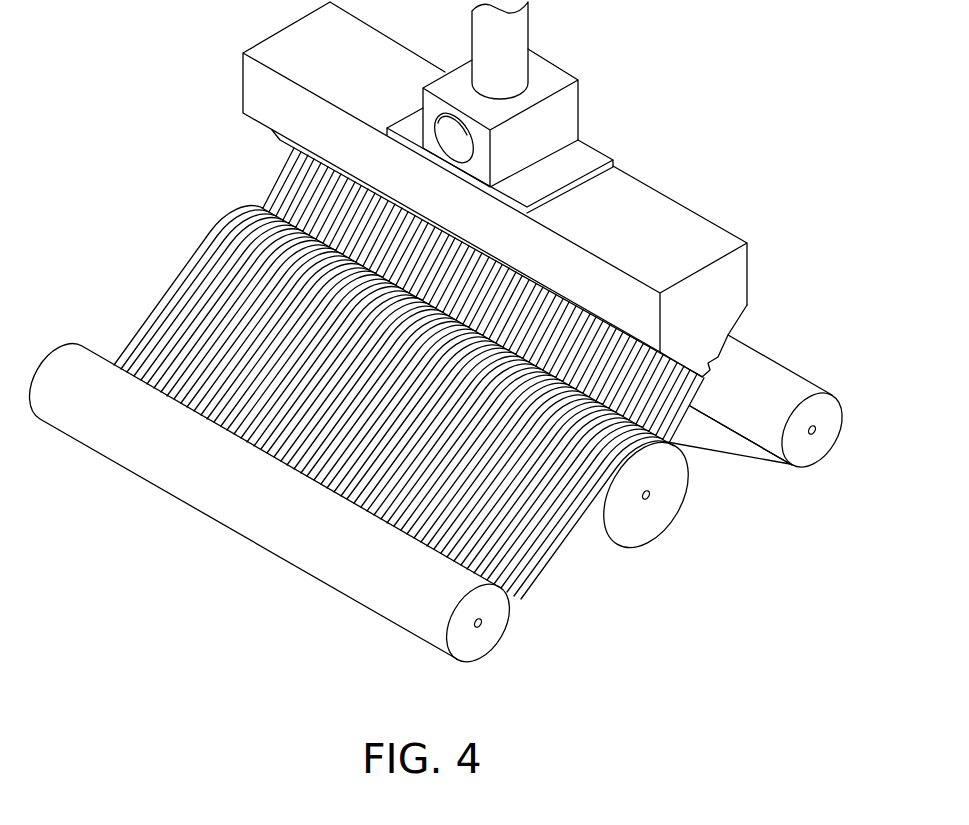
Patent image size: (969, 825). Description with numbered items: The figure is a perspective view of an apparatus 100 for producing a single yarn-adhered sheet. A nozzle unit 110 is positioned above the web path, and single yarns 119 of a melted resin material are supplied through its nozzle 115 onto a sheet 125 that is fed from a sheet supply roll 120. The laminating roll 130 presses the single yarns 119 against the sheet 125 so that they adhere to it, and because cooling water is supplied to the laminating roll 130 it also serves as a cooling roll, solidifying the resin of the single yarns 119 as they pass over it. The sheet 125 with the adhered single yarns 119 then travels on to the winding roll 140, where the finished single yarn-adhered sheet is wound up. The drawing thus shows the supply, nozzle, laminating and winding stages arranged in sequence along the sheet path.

The apparatus for producing a single yarn-adhered sheet 100 is at (151, 31).
The nozzle unit 110 is at (657, 207).
The nozzle 115 is at (703, 342).
The single yarns 119 is at (268, 173).
The sheet supply roll 120 is at (805, 383).
The sheet 125 is at (738, 448).
The laminating roll 130 is at (660, 516).
The winding roll 140 is at (487, 635).